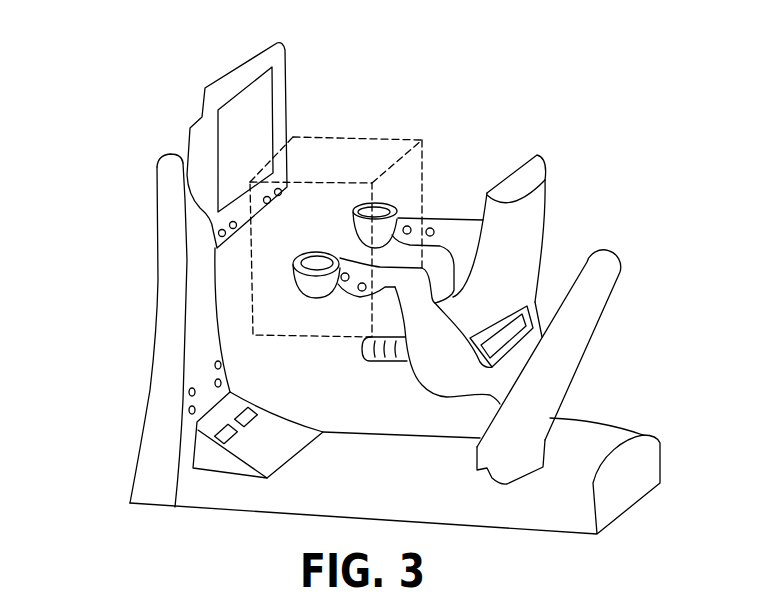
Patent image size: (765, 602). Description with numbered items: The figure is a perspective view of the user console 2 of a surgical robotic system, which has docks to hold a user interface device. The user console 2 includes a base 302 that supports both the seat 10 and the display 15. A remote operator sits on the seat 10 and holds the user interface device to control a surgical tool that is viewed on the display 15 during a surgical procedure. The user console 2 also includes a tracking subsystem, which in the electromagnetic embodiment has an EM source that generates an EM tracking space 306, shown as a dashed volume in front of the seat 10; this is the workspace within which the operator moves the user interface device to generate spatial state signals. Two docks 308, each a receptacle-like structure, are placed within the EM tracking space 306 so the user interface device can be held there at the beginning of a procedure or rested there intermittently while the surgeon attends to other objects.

The user console 2 is at (551, 80).
The seat 10 is at (523, 228).
The display 15 is at (263, 98).
The base 302 is at (590, 437).
The EM tracking space 306 is at (372, 138).
The dock 308 is at (387, 210).